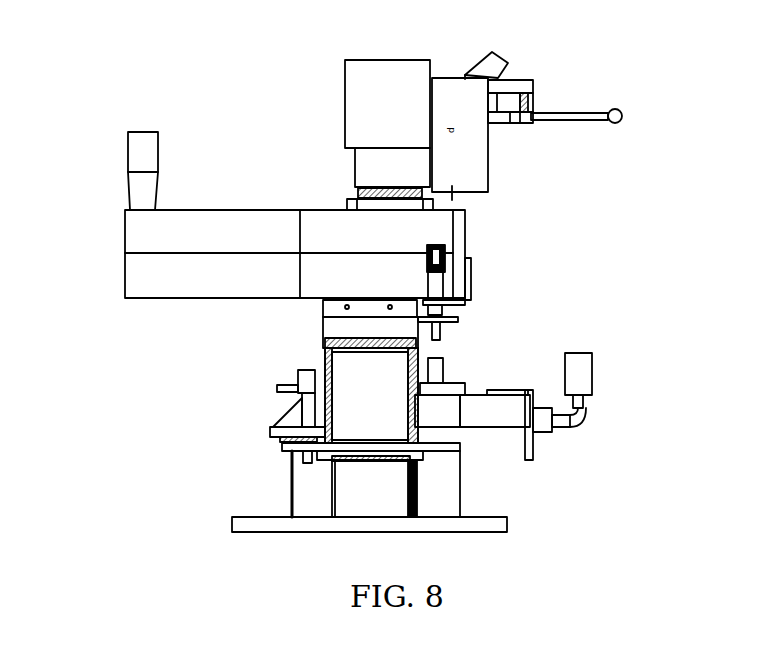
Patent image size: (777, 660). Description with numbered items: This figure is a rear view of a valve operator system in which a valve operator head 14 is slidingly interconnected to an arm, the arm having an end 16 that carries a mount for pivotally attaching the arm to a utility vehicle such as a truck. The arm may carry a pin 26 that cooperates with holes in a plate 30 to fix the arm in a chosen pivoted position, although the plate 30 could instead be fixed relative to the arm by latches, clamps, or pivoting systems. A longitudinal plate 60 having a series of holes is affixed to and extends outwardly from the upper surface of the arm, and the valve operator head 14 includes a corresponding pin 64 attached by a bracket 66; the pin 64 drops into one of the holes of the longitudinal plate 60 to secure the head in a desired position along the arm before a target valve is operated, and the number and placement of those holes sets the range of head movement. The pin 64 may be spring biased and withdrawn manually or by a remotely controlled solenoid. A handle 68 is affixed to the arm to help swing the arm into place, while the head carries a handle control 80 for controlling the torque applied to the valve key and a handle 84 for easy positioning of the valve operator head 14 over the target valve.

The valve operator head 14 is at (125, 278).
The end of arm 16 is at (338, 327).
The pin 26 is at (297, 403).
The plate 30 is at (282, 445).
The longitudinal plate 60 is at (457, 318).
The pin 64 is at (470, 289).
The bracket 66 is at (447, 283).
The handle 68 is at (597, 372).
The handle control 80 is at (617, 125).
The handle 84 is at (128, 147).